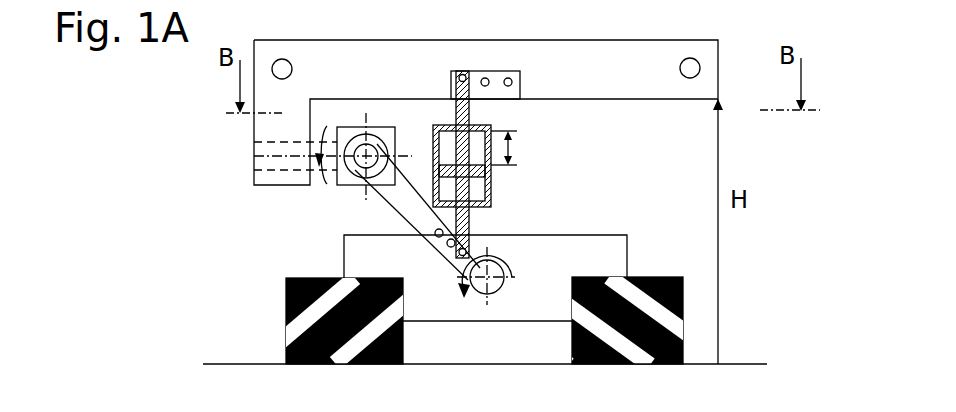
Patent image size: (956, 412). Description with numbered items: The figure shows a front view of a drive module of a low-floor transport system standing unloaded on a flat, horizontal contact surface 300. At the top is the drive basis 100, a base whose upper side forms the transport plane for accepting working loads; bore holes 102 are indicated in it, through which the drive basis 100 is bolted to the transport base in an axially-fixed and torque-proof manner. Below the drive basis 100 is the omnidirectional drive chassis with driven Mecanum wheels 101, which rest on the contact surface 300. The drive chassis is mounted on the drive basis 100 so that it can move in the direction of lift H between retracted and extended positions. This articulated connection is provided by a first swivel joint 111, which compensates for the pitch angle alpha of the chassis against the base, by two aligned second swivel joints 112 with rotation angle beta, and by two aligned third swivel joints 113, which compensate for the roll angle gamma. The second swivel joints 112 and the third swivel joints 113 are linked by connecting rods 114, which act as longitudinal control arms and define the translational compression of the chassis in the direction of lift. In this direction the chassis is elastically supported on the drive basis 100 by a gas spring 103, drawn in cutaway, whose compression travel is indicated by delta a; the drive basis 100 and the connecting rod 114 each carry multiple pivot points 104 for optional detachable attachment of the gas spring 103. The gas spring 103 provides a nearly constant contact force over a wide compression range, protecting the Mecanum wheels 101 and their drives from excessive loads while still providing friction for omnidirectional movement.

The drive basis 100 is at (632, 85).
The driven Mecanum wheels 101 is at (286, 303).
The bore holes 102 is at (292, 69).
The gas spring 103 is at (497, 193).
The pivot points 104 is at (510, 80).
The first swivel joint 111 is at (254, 155).
The second swivel joints 112 is at (348, 172).
The third swivel joints 113 is at (499, 266).
The connecting rods 114 is at (408, 198).
The contact surface 300 is at (757, 364).